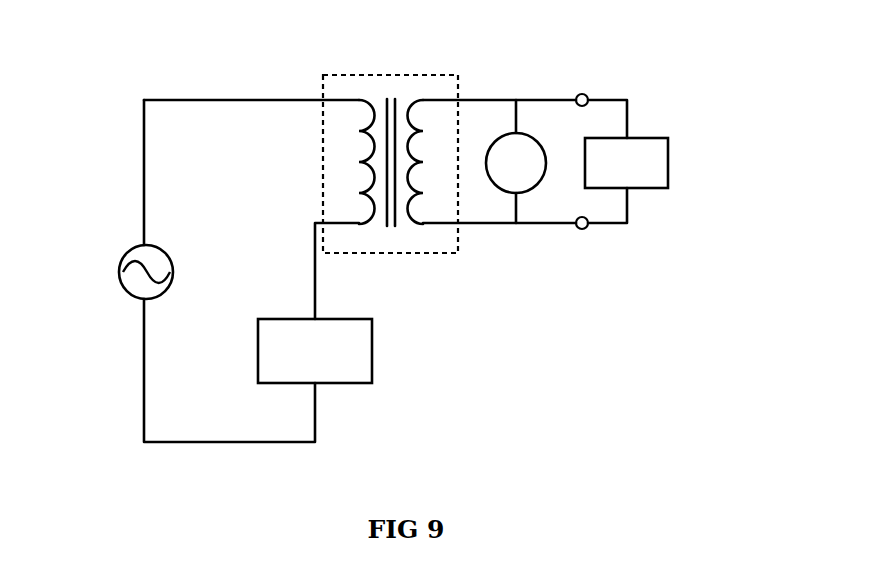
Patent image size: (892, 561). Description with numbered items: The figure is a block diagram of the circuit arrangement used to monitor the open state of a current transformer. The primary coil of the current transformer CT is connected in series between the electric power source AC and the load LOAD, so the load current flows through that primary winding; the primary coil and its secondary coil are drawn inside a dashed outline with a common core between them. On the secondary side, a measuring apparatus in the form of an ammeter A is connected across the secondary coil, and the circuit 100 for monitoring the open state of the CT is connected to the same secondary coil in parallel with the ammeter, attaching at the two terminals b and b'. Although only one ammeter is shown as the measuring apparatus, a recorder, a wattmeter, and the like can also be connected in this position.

The circuit for monitoring open state of CT 100 is at (668, 138).
The terminal b is at (582, 86).
The terminal b' is at (586, 236).
The electric power source AC is at (128, 272).
The ammeter A is at (516, 163).
The load LOAD is at (315, 351).
The current transformer CT is at (390, 150).